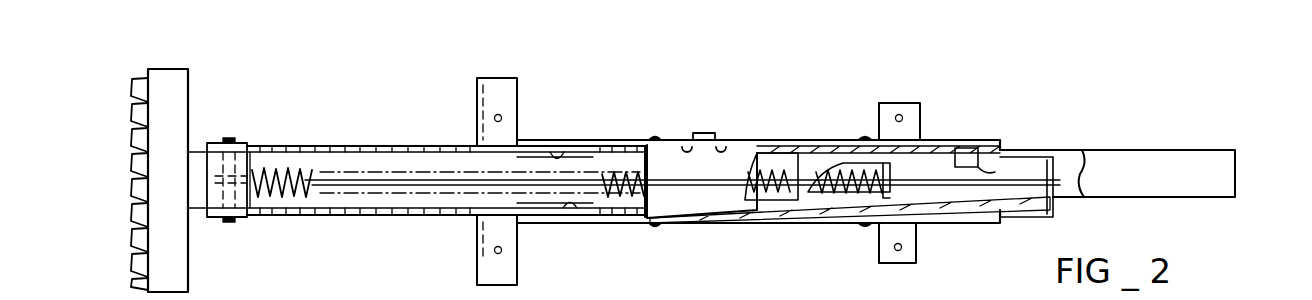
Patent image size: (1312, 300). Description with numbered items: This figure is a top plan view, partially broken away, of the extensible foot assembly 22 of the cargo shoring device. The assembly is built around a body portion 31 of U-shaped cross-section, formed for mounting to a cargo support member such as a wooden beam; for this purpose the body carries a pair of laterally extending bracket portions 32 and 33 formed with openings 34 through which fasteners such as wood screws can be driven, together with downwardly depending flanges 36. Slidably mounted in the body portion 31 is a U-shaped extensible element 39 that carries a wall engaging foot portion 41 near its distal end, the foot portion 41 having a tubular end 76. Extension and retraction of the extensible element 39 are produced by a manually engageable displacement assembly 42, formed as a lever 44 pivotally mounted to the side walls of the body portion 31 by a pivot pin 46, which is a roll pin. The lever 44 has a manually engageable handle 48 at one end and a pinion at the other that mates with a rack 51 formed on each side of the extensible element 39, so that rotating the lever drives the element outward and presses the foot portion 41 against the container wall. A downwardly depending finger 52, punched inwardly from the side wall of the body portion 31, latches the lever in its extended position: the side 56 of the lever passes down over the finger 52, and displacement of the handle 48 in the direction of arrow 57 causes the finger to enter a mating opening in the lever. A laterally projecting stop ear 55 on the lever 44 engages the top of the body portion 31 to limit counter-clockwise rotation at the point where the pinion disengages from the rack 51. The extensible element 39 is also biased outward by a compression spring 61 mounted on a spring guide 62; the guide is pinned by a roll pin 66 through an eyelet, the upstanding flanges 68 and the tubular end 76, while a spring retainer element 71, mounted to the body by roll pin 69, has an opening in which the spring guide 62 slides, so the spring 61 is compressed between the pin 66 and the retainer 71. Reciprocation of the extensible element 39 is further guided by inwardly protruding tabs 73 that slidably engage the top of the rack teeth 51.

The telescoping gun rest assembly 22 is at (735, 134).
The body portion 31 is at (580, 140).
The bracket portion 32 is at (517, 260).
The bracket portion 33 is at (921, 112).
The openings 34 is at (500, 118).
The flanges 36 is at (480, 95).
The extensible element 39 is at (348, 217).
The wall engaging foot portion 41 is at (170, 90).
The displacement assembly 42 is at (688, 198).
The lever 44 is at (960, 213).
The pivot pin 46 is at (654, 138).
The handle 48 is at (1150, 148).
The rack 51 is at (452, 144).
The finger 52 is at (1020, 177).
The stop ear 55 is at (702, 132).
The side 56 is at (950, 148).
The arrow 57 is at (1223, 198).
The compression spring 61 is at (290, 175).
The spring guide 62 is at (340, 172).
The pin 66 is at (228, 138).
The upstanding flanges 68 is at (247, 142).
The roll pin 69 is at (865, 138).
The spring retainer element 71 is at (805, 165).
The tabs 73 is at (557, 157).
The tubular end 76 is at (200, 195).